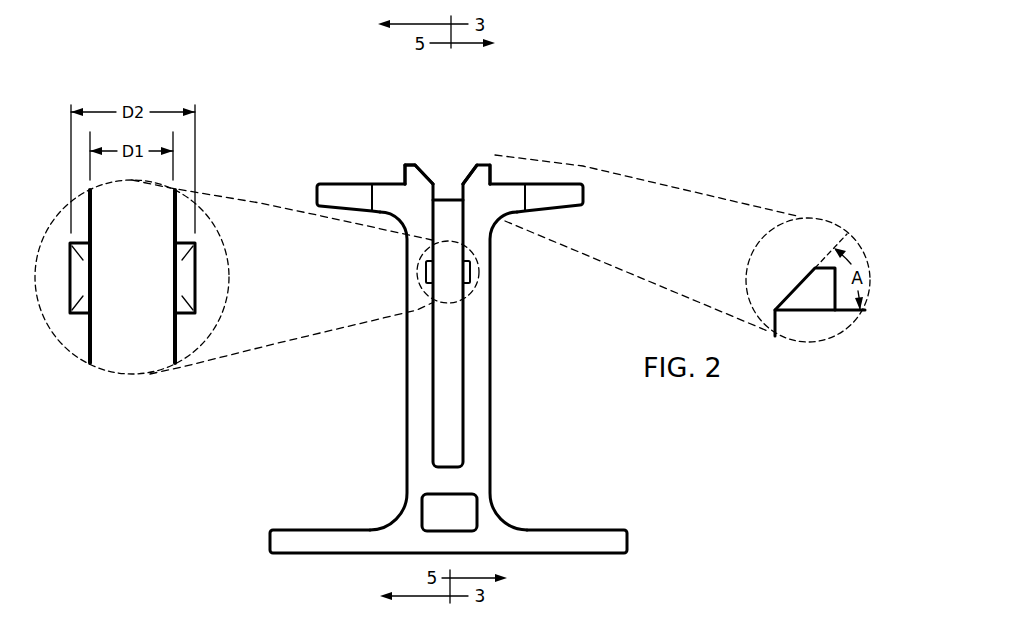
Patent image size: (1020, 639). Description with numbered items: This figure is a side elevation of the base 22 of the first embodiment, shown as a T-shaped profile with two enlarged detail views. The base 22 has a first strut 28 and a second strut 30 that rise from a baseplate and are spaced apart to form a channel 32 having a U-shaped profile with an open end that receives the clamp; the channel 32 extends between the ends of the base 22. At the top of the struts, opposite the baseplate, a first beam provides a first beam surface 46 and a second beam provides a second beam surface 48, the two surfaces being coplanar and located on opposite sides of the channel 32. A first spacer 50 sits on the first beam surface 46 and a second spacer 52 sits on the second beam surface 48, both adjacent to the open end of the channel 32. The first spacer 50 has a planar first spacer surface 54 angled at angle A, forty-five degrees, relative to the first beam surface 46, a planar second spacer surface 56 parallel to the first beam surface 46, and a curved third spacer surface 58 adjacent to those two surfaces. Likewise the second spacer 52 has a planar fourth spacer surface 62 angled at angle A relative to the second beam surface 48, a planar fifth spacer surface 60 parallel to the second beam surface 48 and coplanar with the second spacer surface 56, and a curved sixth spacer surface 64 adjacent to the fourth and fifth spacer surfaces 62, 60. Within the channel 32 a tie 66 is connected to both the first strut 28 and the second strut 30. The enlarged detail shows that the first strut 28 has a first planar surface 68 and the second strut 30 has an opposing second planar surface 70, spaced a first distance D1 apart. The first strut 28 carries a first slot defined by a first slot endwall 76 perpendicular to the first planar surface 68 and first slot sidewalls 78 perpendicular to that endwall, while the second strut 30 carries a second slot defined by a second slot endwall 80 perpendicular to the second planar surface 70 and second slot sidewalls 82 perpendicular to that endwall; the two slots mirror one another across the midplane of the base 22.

The base 22 is at (672, 123).
The first strut 28 is at (418, 347).
The second strut 30 is at (481, 346).
The channel 32 is at (450, 394).
The first beam surface 46 is at (340, 185).
The second beam surface 48 is at (550, 184).
The first spacer 50 is at (410, 176).
The second spacer 52 is at (491, 168).
The first spacer surface 54 is at (431, 177).
The second spacer surface 56 is at (411, 165).
The third spacer surface 58 is at (406, 183).
The fifth spacer surface 60 is at (522, 160).
The fourth spacer surface 62 is at (461, 181).
The sixth spacer surface 64 is at (548, 183).
The tie 66 is at (453, 212).
The first planar surface 68 is at (92, 224).
The second planar surface 70 is at (173, 325).
The first slot endwall 76 is at (83, 272).
The first slot sidewalls 78 is at (68, 258).
The second slot endwall 80 is at (186, 290).
The second slot sidewalls 82 is at (187, 249).